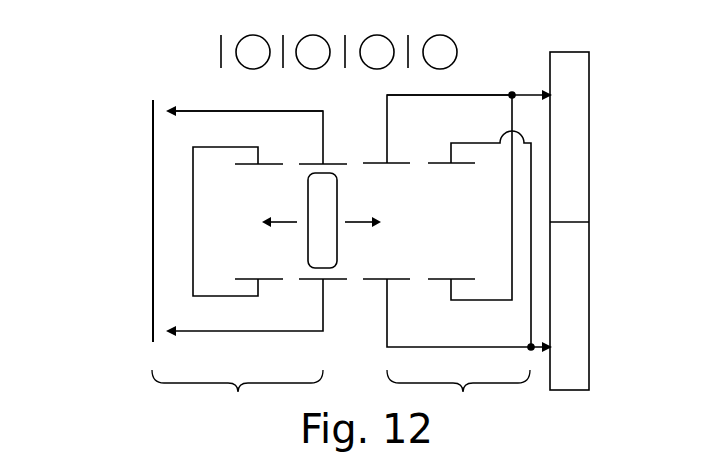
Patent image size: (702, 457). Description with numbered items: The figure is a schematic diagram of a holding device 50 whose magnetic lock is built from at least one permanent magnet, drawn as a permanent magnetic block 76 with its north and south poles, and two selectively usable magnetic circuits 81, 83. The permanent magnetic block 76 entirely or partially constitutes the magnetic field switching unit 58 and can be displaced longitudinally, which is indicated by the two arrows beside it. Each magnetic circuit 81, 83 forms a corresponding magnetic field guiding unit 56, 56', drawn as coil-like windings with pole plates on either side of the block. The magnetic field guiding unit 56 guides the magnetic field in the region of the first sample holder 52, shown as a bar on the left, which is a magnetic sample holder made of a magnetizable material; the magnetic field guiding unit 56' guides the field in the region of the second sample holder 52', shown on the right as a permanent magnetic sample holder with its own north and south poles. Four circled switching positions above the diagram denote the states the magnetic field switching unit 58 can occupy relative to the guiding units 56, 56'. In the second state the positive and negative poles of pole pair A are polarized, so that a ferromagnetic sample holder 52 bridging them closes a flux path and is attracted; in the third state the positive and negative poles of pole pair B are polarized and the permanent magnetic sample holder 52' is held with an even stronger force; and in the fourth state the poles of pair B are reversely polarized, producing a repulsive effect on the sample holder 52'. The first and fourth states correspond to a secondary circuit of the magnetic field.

The holding device 50 is at (100, 95).
The first sample holder 52 is at (107, 221).
The second sample holder 52' is at (607, 221).
The magnetic field guiding unit 56 is at (249, 282).
The magnetic field guiding unit 56' is at (457, 244).
The magnetic field switching unit 58 is at (338, 232).
The permanent magnetic block 76 is at (338, 208).
The magnetic circuit 81 is at (204, 98).
The magnetic circuit 83 is at (489, 82).